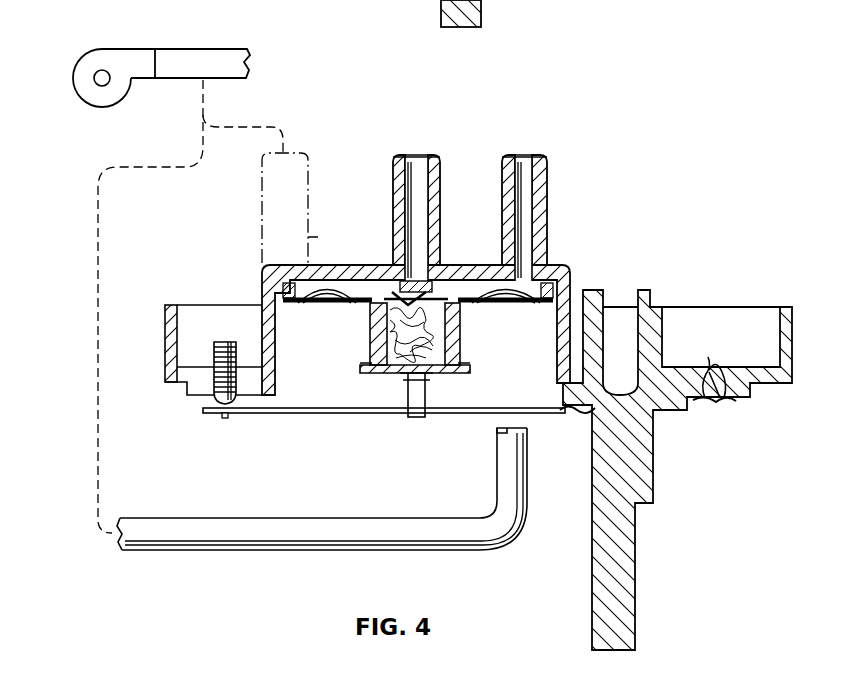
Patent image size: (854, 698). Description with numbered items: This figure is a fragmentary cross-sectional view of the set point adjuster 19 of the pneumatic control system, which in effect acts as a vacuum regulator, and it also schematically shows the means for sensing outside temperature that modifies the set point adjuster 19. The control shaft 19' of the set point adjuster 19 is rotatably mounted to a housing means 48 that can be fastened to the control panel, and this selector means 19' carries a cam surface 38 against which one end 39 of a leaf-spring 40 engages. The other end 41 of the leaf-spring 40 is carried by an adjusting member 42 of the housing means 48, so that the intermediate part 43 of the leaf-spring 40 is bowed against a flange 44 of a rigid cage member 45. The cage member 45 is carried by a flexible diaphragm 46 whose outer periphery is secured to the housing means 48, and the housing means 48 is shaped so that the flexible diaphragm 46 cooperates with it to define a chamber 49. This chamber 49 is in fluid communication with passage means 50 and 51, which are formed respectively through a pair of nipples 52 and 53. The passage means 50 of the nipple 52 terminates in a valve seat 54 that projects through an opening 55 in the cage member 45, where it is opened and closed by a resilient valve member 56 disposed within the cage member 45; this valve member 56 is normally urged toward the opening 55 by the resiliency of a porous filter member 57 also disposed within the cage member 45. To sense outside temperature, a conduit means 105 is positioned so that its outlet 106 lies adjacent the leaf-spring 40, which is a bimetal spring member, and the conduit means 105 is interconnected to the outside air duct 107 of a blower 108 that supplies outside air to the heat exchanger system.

The set point adjuster 19 is at (681, 429).
The control shaft 19' is at (652, 603).
The cam surface 38 is at (682, 404).
The end of leaf-spring 39 is at (573, 414).
The leaf-spring 40 is at (318, 414).
The other end of leaf-spring 41 is at (245, 414).
The adjusting member 42 is at (188, 386).
The intermediate part of leaf-spring 43 is at (405, 389).
The flange 44 is at (416, 420).
The cage member 45 is at (461, 340).
The flexible diaphragm 46 is at (506, 302).
The housing means 48 is at (348, 272).
The chamber 49 is at (358, 282).
The passage means 50 is at (420, 186).
The passage means 51 is at (528, 206).
The nipple 52 is at (430, 180).
The nipple 53 is at (545, 170).
The valve seat 54 is at (410, 282).
The opening 55 is at (432, 290).
The resilient valve member 56 is at (386, 318).
The porous filter member 57 is at (388, 343).
The conduit means 105 is at (323, 549).
The outlet 106 is at (507, 428).
The outside air duct 107 is at (187, 52).
The blower 108 is at (95, 45).